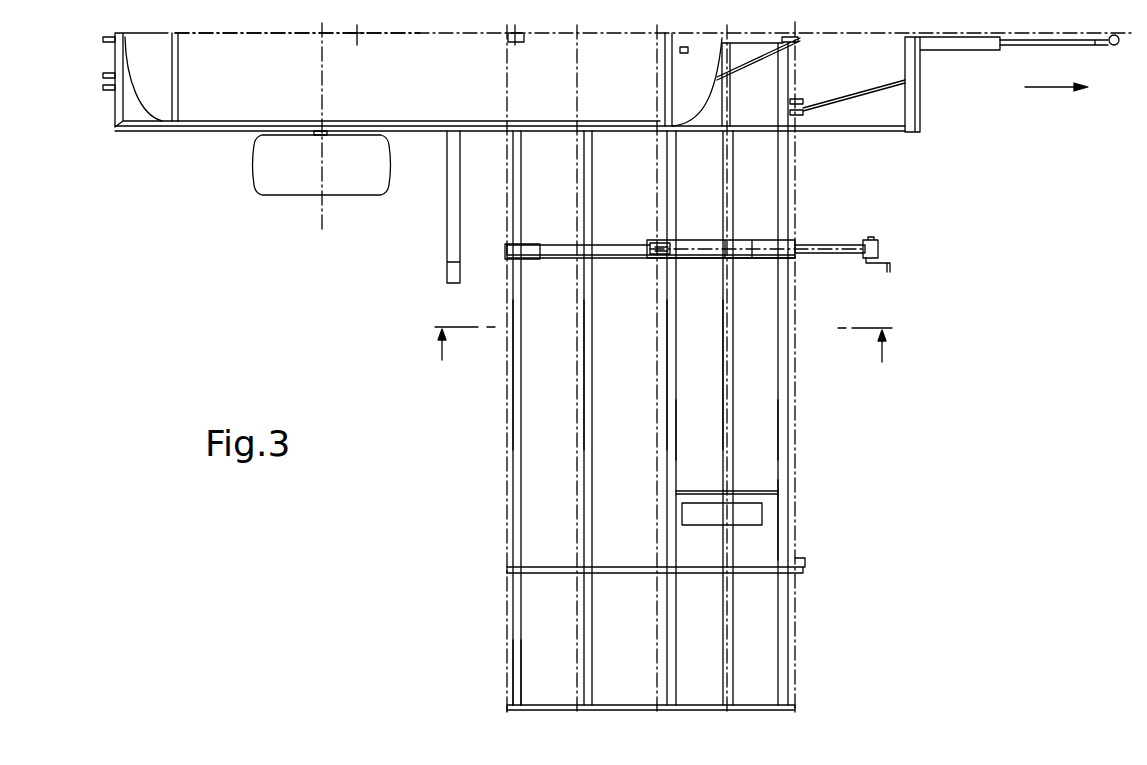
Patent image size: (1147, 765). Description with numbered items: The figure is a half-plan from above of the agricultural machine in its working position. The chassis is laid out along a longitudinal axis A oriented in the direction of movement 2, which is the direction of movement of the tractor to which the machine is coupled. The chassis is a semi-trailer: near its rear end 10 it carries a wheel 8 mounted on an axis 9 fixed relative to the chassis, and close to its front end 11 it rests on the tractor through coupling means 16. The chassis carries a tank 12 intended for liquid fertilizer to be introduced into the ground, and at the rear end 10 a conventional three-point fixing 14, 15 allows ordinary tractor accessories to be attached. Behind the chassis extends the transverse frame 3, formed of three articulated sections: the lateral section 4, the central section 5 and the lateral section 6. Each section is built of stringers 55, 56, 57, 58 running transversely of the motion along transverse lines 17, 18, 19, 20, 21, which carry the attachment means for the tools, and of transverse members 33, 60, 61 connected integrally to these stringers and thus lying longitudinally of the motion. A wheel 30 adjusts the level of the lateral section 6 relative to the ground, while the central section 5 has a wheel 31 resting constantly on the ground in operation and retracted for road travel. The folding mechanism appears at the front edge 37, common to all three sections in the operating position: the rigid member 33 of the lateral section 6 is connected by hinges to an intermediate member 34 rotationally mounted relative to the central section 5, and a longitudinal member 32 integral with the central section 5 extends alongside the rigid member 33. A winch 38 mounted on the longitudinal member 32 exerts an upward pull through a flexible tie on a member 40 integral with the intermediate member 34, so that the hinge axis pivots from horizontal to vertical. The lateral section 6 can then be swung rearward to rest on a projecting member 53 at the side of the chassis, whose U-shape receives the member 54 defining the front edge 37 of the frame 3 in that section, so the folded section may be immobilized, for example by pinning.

The longitudinal axis A is at (413, 33).
The direction of movement 2 is at (1048, 87).
The transverse frame 3 is at (792, 357).
The lateral section 4 is at (662, 362).
The central section 5 is at (755, 205).
The lateral section 6 is at (695, 432).
The wheel 8 is at (296, 183).
The axis 9 is at (322, 212).
The rear end 10 is at (102, 118).
The front end 11 is at (918, 137).
The tank 12 is at (210, 107).
The three-point fixing 14 is at (102, 40).
The three-point fixing 15 is at (102, 80).
The coupling means 16 is at (1118, 47).
The transverse line 17 is at (794, 714).
The transverse line 18 is at (728, 714).
The transverse line 19 is at (659, 714).
The transverse line 20 is at (580, 712).
The transverse line 21 is at (511, 713).
The wheel 30 is at (757, 513).
The wheel 31 is at (742, 30).
The longitudinal member 32 is at (552, 252).
The rigid member 33 is at (540, 262).
The intermediate member 34 is at (695, 250).
The front edge 37 is at (790, 228).
The winch 38 is at (868, 266).
The member 40 is at (661, 248).
The projecting member 53 is at (444, 274).
The member 54 is at (785, 538).
The stringer 55 is at (730, 368).
The stringer 56 is at (668, 372).
The stringer 57 is at (592, 356).
The stringer 58 is at (518, 380).
The transverse member 60 is at (537, 567).
The transverse member 61 is at (535, 703).